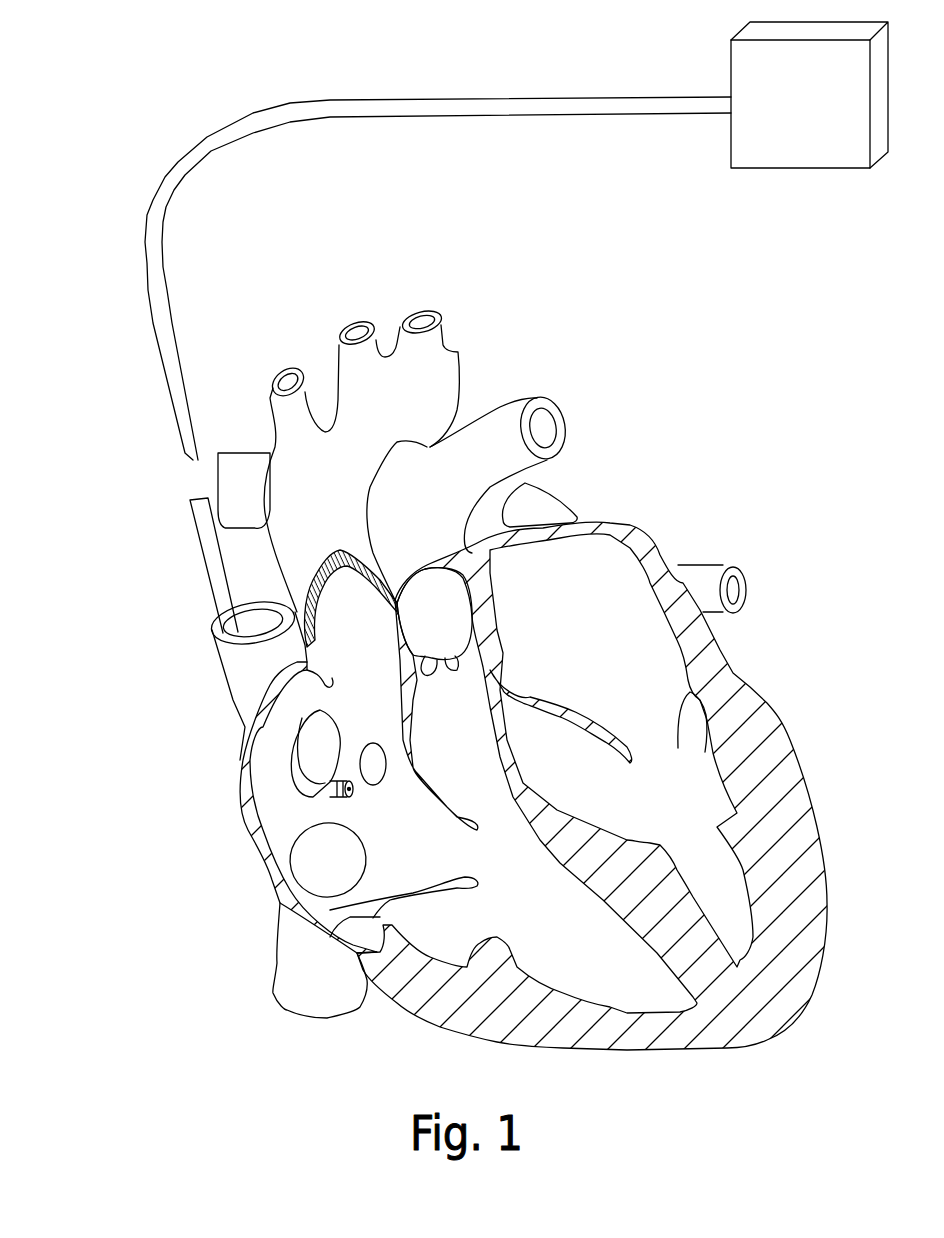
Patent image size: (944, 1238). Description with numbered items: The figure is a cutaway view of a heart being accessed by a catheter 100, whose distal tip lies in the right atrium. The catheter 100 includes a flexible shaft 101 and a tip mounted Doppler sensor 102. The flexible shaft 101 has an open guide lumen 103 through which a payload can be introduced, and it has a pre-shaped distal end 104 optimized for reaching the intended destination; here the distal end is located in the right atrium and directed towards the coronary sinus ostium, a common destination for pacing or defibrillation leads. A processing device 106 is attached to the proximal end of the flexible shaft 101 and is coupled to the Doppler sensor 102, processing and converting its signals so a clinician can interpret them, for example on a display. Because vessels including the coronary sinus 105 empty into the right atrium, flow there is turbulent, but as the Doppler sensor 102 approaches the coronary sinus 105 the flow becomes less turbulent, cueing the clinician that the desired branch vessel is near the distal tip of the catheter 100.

The catheter 100 is at (468, 327).
The flexible shaft 101 is at (202, 542).
The Doppler sensor 102 is at (345, 796).
The open guide lumen 103 is at (351, 795).
The pre-shaped distal end 104 is at (300, 784).
The coronary sinus 105 is at (393, 753).
The processing device 106 is at (728, 153).